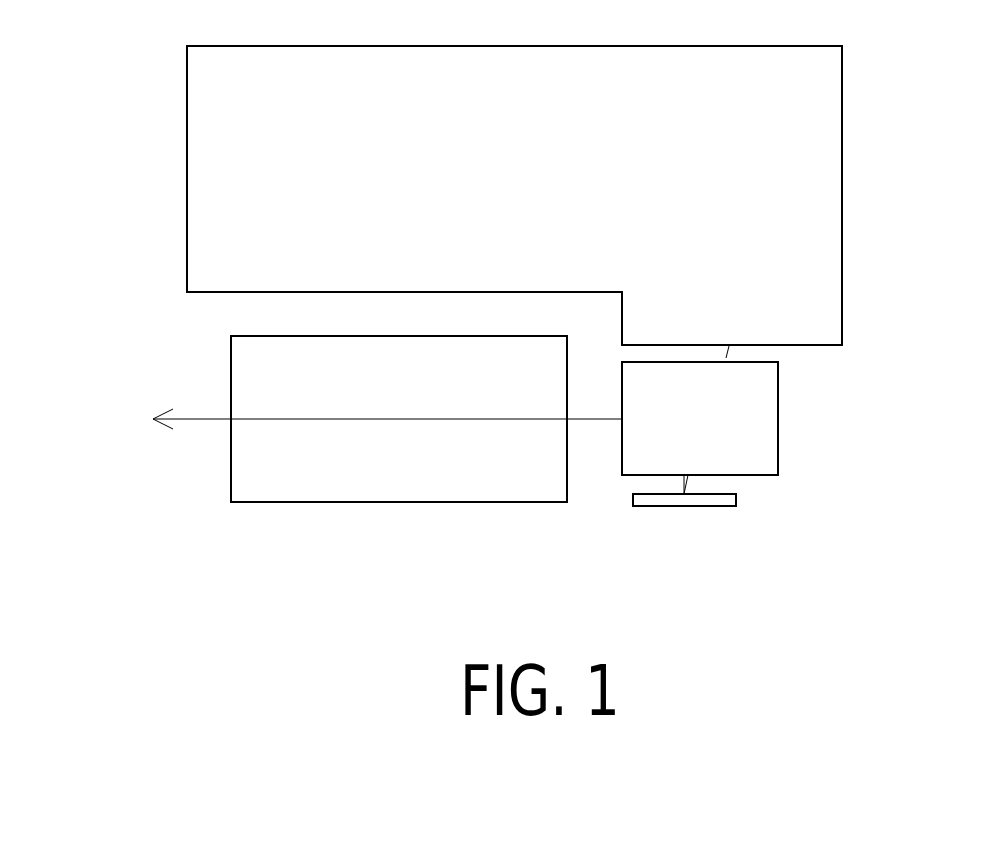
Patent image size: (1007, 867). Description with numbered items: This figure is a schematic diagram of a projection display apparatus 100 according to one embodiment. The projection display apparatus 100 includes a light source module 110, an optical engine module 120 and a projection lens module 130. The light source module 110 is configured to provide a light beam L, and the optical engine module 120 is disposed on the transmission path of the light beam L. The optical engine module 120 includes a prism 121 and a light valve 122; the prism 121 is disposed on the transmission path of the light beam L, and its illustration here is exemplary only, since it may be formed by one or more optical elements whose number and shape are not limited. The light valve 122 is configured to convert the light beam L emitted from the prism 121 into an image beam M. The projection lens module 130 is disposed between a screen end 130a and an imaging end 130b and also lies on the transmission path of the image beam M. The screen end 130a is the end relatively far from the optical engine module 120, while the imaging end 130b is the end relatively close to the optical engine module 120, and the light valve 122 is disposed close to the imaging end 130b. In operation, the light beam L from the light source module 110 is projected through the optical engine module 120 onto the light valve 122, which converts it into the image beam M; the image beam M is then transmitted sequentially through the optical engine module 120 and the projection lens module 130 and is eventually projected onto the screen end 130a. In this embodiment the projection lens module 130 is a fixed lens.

The projection display apparatus 100 is at (990, 554).
The light source module 110 is at (807, 207).
The optical engine module 120 is at (791, 441).
The prism 121 is at (757, 398).
The light valve 122 is at (736, 499).
The projection lens module 130 is at (455, 480).
The screen end 130a is at (215, 464).
The imaging end 130b is at (575, 517).
The light beam L is at (726, 358).
The image beam M is at (595, 423).